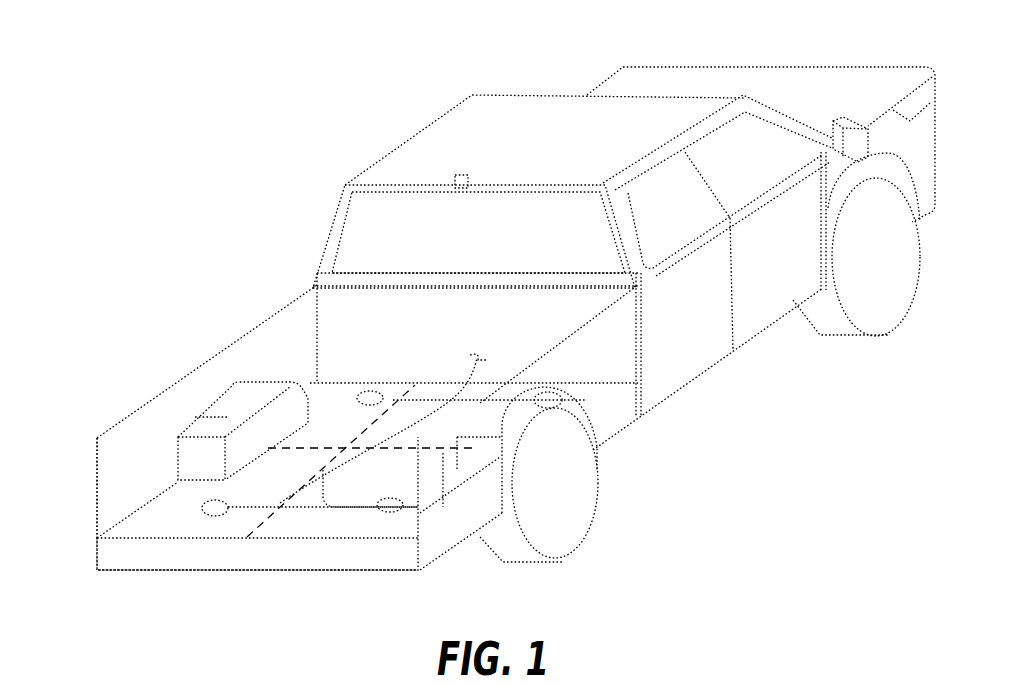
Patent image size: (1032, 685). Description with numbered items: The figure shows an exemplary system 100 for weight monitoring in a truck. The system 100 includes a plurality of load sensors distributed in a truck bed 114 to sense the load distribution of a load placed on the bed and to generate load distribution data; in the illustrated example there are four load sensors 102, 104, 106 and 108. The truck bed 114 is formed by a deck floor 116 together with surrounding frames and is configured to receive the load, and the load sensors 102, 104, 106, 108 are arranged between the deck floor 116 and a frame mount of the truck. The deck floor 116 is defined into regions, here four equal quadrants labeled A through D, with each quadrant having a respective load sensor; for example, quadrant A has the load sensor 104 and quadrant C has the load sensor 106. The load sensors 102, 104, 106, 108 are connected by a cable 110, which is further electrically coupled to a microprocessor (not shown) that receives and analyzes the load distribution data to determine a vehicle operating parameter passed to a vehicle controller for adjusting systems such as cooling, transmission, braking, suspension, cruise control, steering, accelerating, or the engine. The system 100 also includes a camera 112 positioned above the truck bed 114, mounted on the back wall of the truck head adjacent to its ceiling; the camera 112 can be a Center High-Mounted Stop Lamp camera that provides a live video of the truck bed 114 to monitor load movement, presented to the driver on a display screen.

The system 100 is at (97, 101).
The load sensor 102 is at (363, 395).
The load sensor 104 is at (212, 510).
The load sensor 106 is at (388, 507).
The load sensor 108 is at (538, 393).
The cable 110 is at (260, 507).
The camera 112 is at (453, 175).
The truck bed 114 is at (140, 443).
The deck floor 116 is at (140, 525).